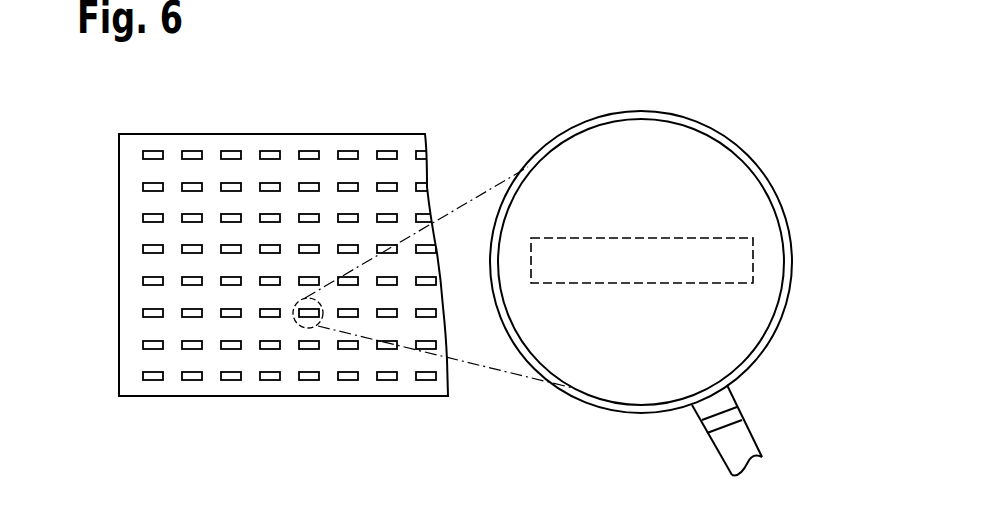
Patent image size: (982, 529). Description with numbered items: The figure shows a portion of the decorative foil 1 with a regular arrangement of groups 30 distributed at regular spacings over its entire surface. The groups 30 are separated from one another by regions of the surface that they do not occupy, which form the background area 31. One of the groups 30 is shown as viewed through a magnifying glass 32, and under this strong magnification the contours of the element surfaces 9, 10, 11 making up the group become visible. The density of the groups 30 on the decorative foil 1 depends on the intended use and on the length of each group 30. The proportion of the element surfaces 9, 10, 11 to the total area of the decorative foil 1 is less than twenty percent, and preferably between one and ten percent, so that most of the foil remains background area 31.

The decorative foil 1 is at (128, 220).
The background area 31 is at (173, 297).
The groups 30 is at (564, 238).
The magnifying glass 32 is at (762, 173).
The element surface 9 is at (583, 282).
The element surface 10 is at (688, 282).
The element surface 11 is at (742, 282).